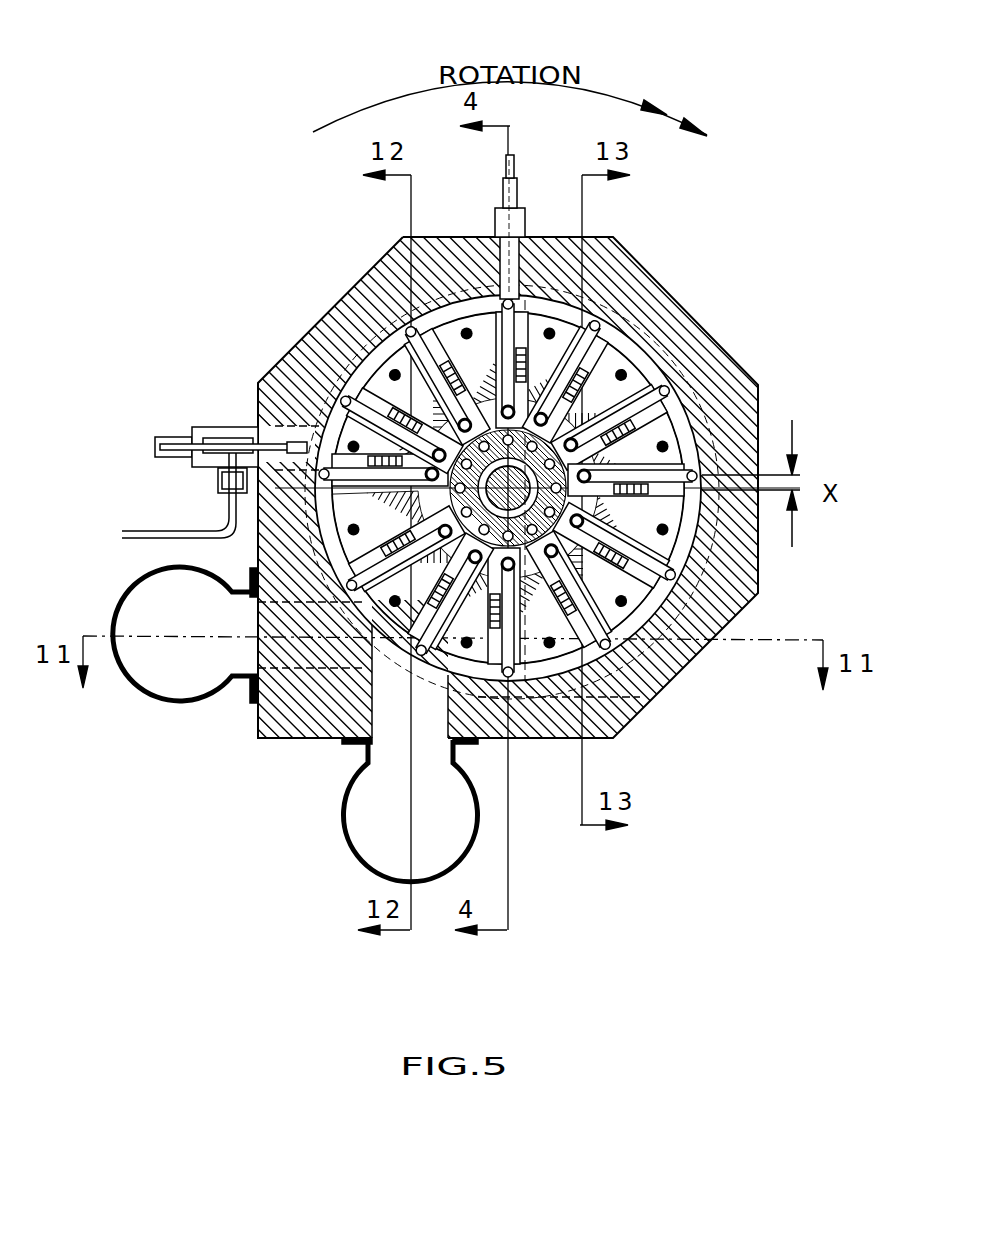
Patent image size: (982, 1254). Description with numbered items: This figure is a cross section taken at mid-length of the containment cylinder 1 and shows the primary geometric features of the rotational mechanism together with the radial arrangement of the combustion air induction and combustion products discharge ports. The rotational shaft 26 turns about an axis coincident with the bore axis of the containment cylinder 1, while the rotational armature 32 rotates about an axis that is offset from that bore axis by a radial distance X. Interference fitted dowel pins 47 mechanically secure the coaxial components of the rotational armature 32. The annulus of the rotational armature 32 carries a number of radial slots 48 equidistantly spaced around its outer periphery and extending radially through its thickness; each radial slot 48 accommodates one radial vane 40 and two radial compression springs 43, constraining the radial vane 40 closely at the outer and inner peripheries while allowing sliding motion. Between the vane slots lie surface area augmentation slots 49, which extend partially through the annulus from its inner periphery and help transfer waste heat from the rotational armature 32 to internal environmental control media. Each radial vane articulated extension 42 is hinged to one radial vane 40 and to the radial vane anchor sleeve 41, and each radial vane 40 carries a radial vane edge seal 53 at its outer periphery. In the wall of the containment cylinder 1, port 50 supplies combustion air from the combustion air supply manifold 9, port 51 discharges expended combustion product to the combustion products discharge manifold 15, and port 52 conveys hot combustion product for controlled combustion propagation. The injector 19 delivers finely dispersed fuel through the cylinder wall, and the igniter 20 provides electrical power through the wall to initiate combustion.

The containment cylinder 1 is at (760, 386).
The combustion air supply manifold 9 is at (142, 580).
The combustion products discharge manifold 15 is at (345, 798).
The injector 19 is at (160, 438).
The igniter 20 is at (498, 208).
The rotational shaft 26 is at (645, 632).
The rotational armature 32 is at (322, 460).
The radial vane 40 is at (398, 355).
The radial vane anchor sleeve 41 is at (662, 385).
The radial vane articulated extension 42 is at (540, 418).
The radial compression spring 43 is at (425, 323).
The interference fitted dowel pin 47 is at (355, 383).
The radial slot 48 is at (507, 299).
The surface area augmentation slot 49 is at (478, 297).
The port 50 is at (312, 667).
The port 51 is at (313, 737).
The port 52 is at (594, 305).
The radial vane edge seal 53 is at (372, 368).